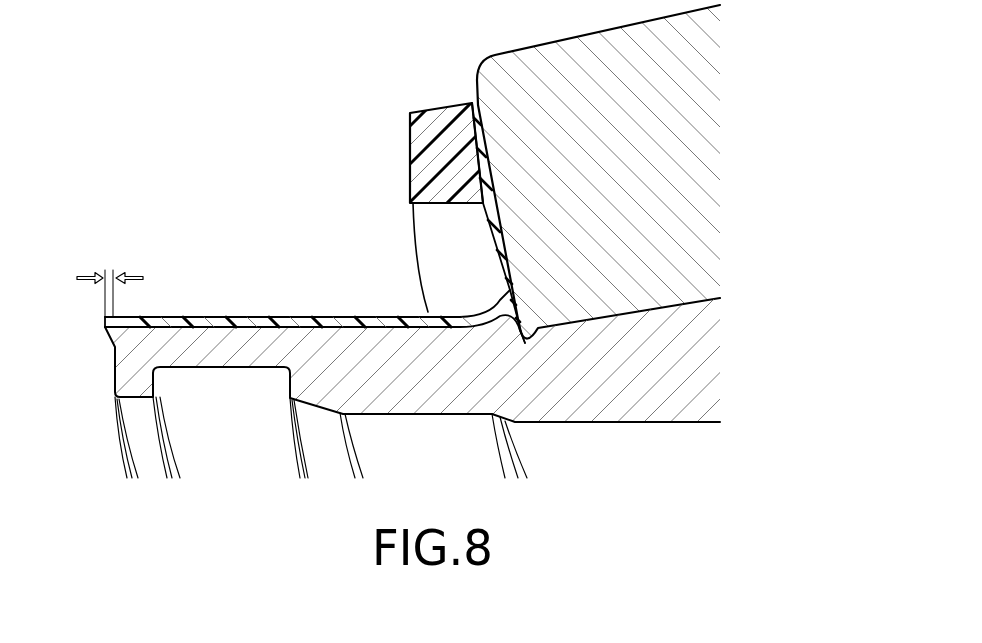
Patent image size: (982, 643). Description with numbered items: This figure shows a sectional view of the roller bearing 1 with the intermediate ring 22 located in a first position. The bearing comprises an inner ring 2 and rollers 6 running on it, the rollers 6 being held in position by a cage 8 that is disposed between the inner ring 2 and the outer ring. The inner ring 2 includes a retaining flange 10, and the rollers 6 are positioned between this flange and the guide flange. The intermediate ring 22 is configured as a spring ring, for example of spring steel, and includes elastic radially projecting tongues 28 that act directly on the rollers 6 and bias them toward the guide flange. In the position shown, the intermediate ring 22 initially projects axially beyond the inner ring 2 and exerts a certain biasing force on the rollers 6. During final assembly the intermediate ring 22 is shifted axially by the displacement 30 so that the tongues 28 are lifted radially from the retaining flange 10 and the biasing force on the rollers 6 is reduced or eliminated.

The roller bearing 1 is at (297, 94).
The inner ring 2 is at (628, 402).
The rollers 6 is at (682, 258).
The cage 8 is at (450, 130).
The retaining flange 10 is at (510, 332).
The intermediate ring 22 is at (305, 322).
The elastic tongues 28 is at (493, 255).
The displacement 30 is at (110, 272).